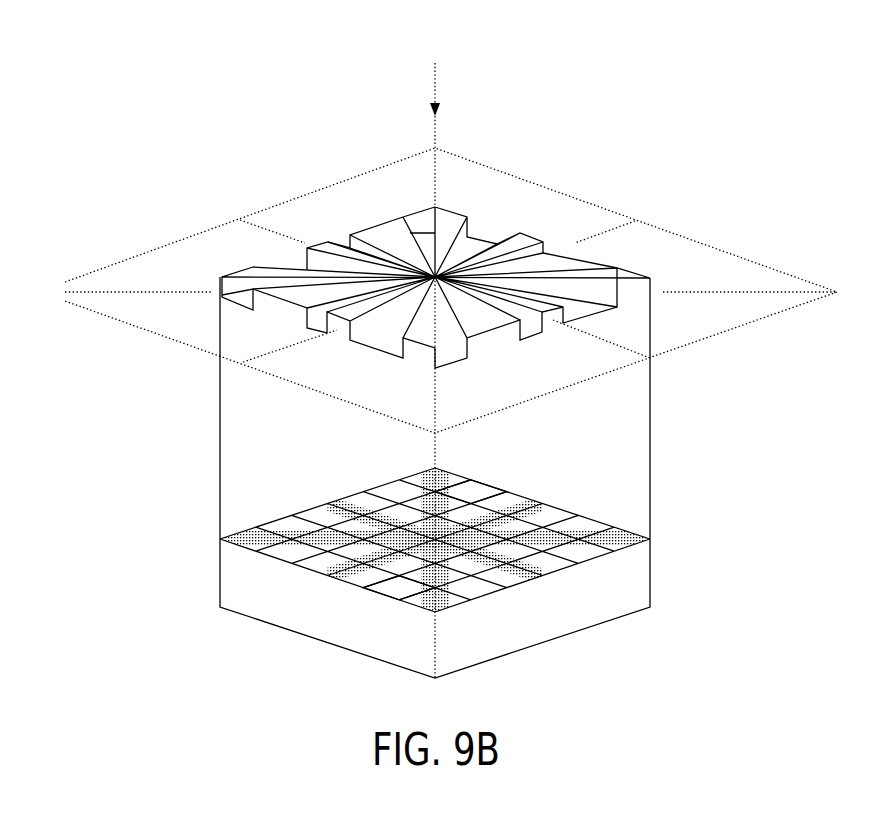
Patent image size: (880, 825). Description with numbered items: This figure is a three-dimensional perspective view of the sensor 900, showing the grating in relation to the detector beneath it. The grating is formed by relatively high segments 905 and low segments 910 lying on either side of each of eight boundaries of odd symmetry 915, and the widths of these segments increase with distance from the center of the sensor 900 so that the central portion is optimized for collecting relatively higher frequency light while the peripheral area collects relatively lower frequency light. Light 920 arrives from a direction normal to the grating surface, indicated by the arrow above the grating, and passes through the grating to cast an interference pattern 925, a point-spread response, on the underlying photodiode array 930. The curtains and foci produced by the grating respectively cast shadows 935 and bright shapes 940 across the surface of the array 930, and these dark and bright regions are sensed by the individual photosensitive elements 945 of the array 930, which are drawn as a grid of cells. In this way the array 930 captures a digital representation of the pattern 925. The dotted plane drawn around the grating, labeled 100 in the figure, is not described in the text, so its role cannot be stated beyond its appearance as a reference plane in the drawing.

The sensor 900 is at (242, 103).
The relatively high segments 905 is at (572, 263).
The low segments 910 is at (478, 245).
The boundaries of odd symmetry 915 is at (437, 163).
The light 920 is at (437, 83).
The interference pattern 925 is at (320, 477).
The photodiode array 930 is at (519, 631).
The shadows 935 is at (533, 507).
The bright shapes 940 is at (482, 495).
The photosensitive elements 945 is at (378, 585).
The detector plane 100 is at (668, 353).